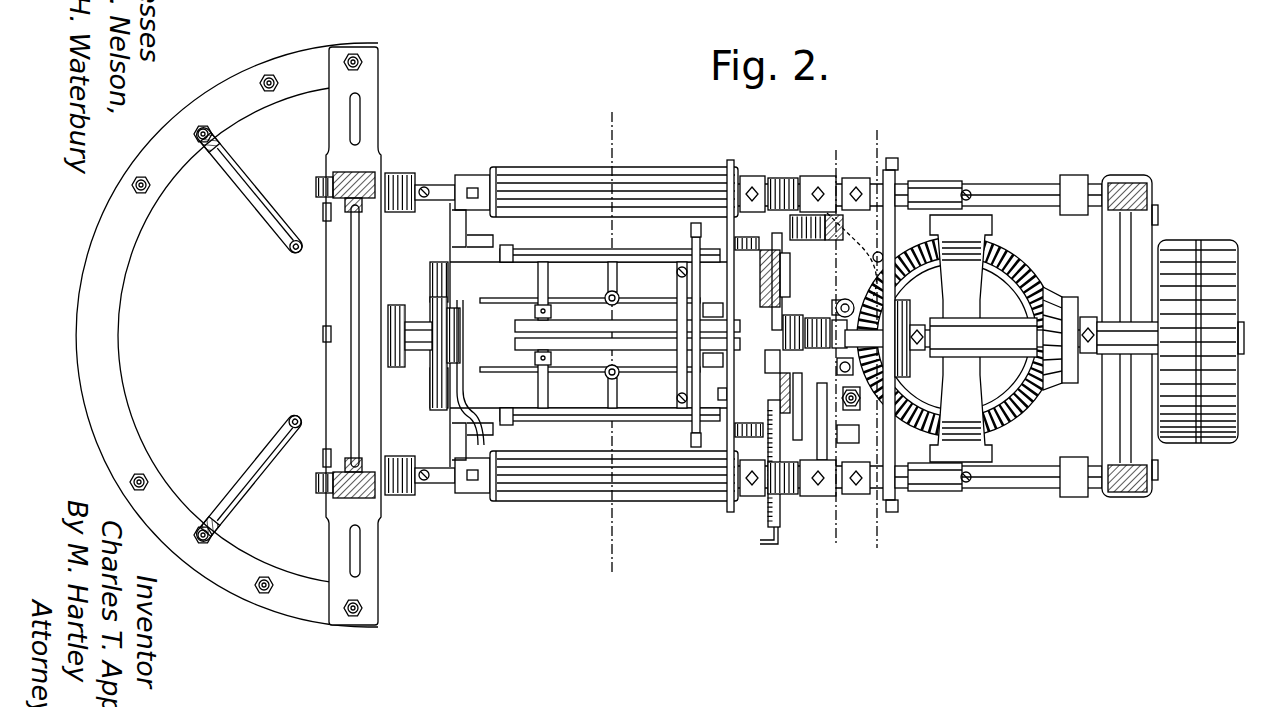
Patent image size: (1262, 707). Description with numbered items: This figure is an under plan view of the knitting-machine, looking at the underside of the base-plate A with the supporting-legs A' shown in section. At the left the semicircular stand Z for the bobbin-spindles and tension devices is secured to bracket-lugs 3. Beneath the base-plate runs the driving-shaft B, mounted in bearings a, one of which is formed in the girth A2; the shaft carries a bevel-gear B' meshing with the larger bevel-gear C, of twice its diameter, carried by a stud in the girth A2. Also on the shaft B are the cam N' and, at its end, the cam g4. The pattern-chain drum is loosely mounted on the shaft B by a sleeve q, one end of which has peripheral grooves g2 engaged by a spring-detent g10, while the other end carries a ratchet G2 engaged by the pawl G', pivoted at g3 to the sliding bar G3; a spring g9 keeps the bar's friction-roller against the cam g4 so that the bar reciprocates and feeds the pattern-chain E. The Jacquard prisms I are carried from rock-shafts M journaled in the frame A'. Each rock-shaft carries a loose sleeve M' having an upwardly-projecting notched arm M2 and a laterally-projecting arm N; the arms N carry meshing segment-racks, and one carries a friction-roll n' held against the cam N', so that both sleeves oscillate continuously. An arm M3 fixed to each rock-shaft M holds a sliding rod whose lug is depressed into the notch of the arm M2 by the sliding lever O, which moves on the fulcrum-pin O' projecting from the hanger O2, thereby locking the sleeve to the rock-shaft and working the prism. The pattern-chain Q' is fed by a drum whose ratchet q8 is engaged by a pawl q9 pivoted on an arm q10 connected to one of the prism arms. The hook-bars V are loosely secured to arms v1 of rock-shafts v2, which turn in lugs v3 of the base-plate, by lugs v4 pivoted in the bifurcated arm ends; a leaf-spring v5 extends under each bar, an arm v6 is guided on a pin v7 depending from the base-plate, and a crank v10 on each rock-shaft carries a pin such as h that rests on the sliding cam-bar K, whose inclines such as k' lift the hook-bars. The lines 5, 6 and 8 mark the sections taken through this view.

The semicircular stand Z is at (227, 335).
The bracket-lug 3 is at (372, 118).
The base-plate A is at (1107, 336).
The supporting-legs A' is at (731, 353).
The girth A2 is at (961, 338).
The grooved octagonal prisms I is at (532, 170).
The section line 8- 8 is at (622, 116).
The section line 5- 5 is at (844, 160).
The section line 6- 6 is at (884, 147).
The arms v1 is at (677, 402).
The rock-shaft v2 is at (580, 252).
The lugs v3 is at (512, 248).
The lugs v4 is at (551, 311).
The leaf-spring v5 is at (677, 306).
The arm v6 is at (617, 277).
The pin v7 is at (619, 297).
The arm or crank v10 is at (700, 278).
The hook-bars V is at (594, 326).
The incline k' is at (713, 300).
The crank-pin h is at (713, 368).
The cam g4 is at (728, 394).
The pattern-chain Q' is at (410, 324).
The ratchet q8 is at (462, 312).
The pawl q9 is at (440, 378).
The arm q10 is at (474, 386).
The sliding cam-bar K is at (734, 230).
The sliding lever O is at (814, 342).
The fulcrum-pin O' is at (850, 336).
The hanger O2 is at (842, 321).
The pivot g3 is at (807, 236).
The peripheral grooves g2 is at (832, 308).
The spring g9 is at (781, 512).
The spring-detent g10 is at (809, 406).
The pattern-chain E is at (800, 318).
The pawl G' is at (760, 278).
The ratchet G2 is at (776, 381).
The sliding bar G3 is at (749, 441).
The sleeve q is at (813, 332).
The rock-shafts M is at (998, 340).
The sleeve M' is at (940, 340).
The upwardly-projecting arm M2 is at (853, 178).
The arm M3 is at (806, 175).
The laterally-projecting arm N is at (898, 335).
The cam N' is at (916, 359).
The friction-roll n' is at (913, 327).
The bevel-gear C is at (1027, 263).
The bearings a is at (846, 299).
The driving-shaft B is at (1119, 365).
The bevel-gear B' is at (1066, 321).